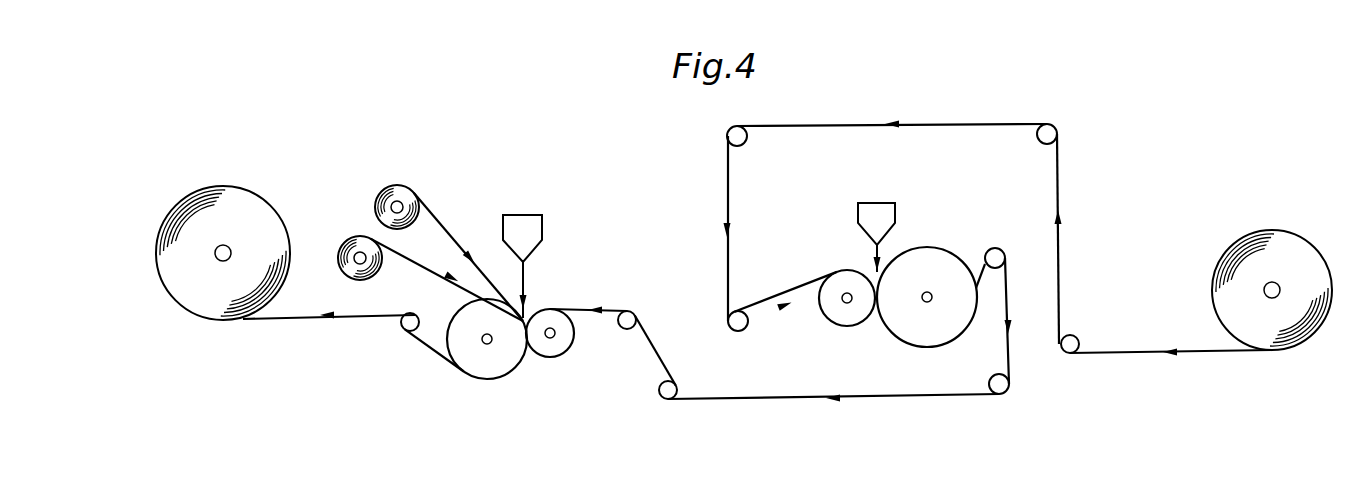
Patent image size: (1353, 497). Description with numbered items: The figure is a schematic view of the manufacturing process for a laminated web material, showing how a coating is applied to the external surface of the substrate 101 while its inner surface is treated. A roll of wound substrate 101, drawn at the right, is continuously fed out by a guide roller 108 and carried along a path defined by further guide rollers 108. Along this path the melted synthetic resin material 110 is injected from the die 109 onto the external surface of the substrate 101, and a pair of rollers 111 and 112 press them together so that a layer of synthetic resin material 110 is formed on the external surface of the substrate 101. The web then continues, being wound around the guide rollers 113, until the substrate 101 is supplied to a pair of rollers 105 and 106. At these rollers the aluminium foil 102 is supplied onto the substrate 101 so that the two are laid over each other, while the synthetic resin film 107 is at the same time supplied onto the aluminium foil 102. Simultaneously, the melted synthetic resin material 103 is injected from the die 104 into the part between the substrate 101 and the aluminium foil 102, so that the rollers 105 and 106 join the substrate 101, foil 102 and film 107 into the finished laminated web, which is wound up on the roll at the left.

The substrate 101 is at (1132, 354).
The aluminium foil 102 is at (430, 212).
The melted synthetic resin material 103 is at (528, 290).
The die 104 is at (534, 226).
The roller 105 is at (486, 369).
The roller 106 is at (552, 351).
The synthetic resin film 107 is at (420, 270).
The guide roller 108 is at (744, 146).
The die 109 is at (890, 212).
The melted synthetic resin material 110 is at (882, 250).
The roller 111 is at (845, 318).
The roller 112 is at (930, 341).
The guide rollers 113 is at (627, 327).